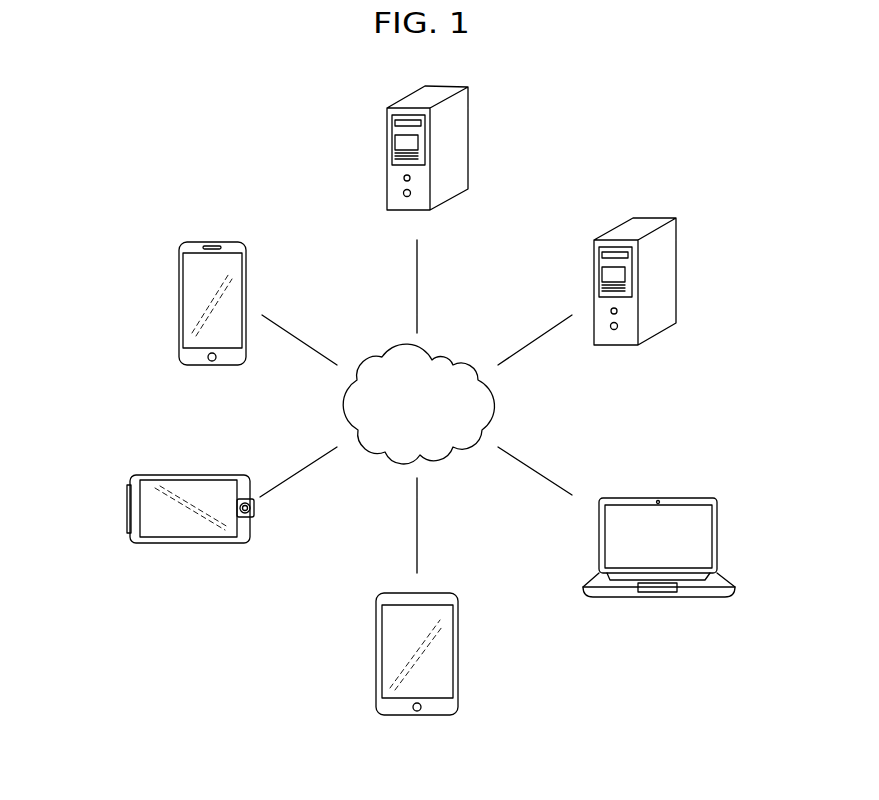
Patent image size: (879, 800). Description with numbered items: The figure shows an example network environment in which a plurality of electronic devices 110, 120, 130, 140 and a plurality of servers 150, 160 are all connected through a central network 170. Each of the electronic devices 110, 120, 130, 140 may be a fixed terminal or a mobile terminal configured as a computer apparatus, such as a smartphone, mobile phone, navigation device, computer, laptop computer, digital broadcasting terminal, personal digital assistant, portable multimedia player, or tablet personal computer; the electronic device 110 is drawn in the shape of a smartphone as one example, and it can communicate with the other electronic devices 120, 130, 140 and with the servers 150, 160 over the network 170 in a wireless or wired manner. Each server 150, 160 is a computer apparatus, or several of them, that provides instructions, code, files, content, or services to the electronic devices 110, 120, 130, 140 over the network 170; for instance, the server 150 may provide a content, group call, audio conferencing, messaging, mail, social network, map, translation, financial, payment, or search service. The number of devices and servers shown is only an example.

The electronic device 110 is at (179, 303).
The electronic device 120 is at (130, 507).
The electronic device 130 is at (458, 655).
The electronic device 140 is at (717, 538).
The server 150 is at (678, 265).
The server 160 is at (468, 135).
The network 170 is at (445, 358).